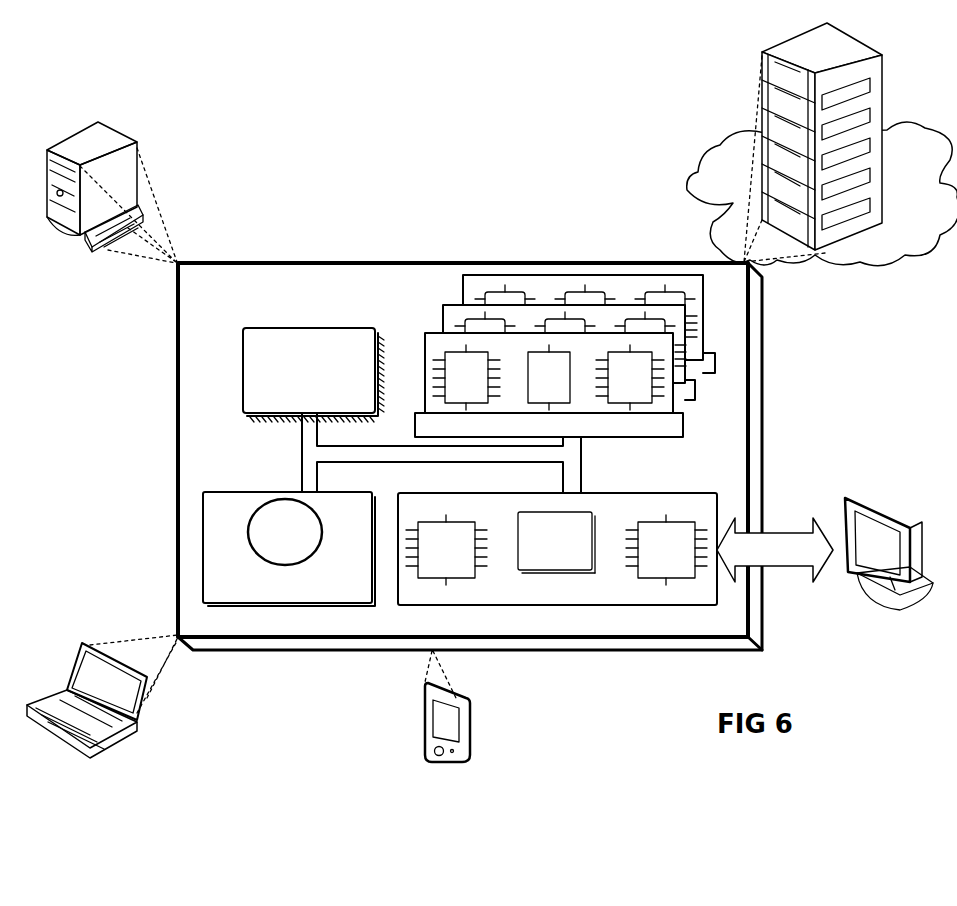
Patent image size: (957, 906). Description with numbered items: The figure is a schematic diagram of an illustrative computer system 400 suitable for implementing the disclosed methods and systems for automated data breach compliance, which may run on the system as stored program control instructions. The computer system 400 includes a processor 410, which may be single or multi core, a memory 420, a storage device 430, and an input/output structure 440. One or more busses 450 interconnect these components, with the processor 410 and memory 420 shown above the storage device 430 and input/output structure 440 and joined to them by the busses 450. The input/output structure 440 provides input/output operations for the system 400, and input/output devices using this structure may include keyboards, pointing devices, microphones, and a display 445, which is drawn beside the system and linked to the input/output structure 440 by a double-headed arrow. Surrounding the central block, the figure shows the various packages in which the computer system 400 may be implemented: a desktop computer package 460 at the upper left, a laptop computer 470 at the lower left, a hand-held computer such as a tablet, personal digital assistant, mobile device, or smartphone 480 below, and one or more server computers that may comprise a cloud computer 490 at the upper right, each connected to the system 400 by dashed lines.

The computer system 400 is at (402, 206).
The processor 410 is at (329, 327).
The memory 420 is at (552, 275).
The storage device 430 is at (232, 492).
The input/output structure 440 is at (652, 493).
The display 445 is at (900, 512).
The busses 450 is at (584, 477).
The desktop computer package 460 is at (124, 133).
The laptop computer 470 is at (138, 722).
The smartphone 480 is at (475, 718).
The cloud computer 490 is at (698, 185).